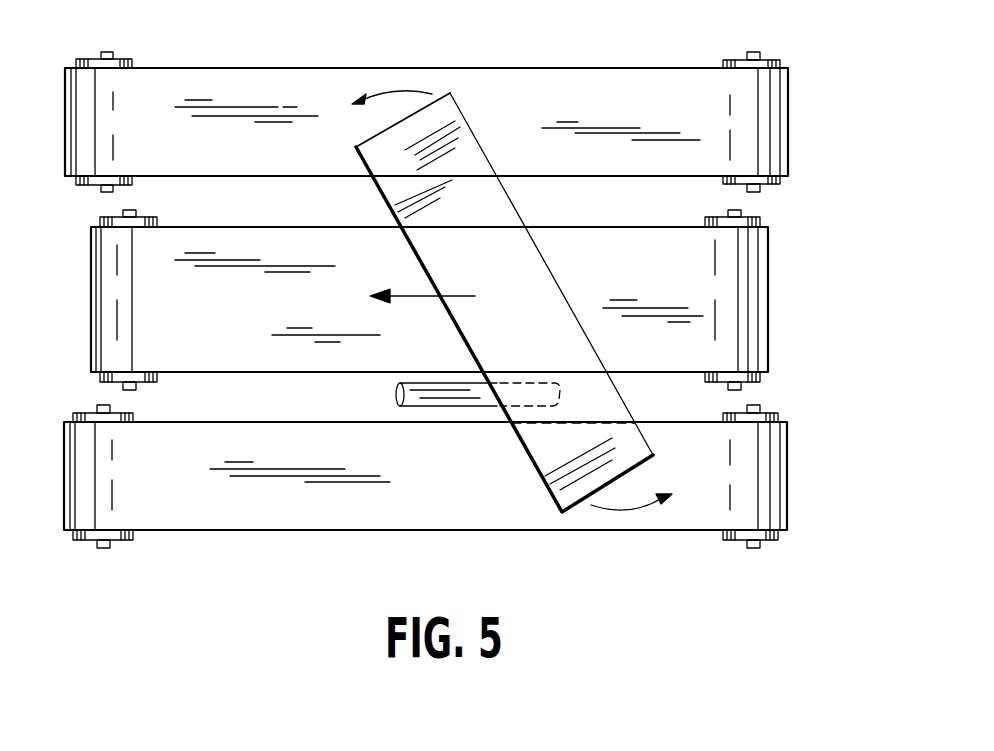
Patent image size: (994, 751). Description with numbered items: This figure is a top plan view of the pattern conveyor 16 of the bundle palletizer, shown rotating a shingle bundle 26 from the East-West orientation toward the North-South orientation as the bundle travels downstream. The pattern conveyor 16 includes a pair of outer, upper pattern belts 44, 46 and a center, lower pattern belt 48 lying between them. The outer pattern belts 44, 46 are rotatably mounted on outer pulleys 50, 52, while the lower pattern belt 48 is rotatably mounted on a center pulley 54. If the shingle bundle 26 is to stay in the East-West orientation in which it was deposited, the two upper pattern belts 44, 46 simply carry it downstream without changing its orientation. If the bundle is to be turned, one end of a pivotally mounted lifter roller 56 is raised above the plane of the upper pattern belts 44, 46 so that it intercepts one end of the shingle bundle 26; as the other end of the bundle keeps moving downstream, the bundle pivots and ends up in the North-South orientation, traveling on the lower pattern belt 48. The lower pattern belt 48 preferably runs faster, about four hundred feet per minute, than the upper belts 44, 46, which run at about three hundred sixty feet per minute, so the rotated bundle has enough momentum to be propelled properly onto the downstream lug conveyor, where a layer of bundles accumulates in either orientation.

The pattern conveyor 16 is at (469, 311).
The shingle bundle 26 is at (477, 132).
The upper pattern belt 44 is at (454, 98).
The upper pattern belt 46 is at (464, 512).
The lower pattern belt 48 is at (478, 302).
The outer pulley 50 is at (765, 543).
The outer pulley 52 is at (742, 58).
The center pulley 54 is at (745, 386).
The lifter roller 56 is at (399, 390).